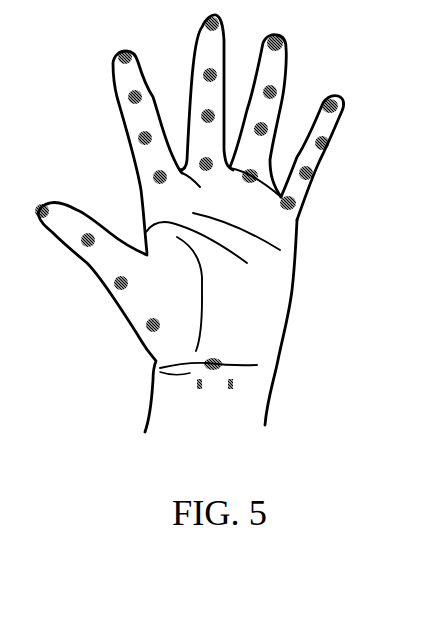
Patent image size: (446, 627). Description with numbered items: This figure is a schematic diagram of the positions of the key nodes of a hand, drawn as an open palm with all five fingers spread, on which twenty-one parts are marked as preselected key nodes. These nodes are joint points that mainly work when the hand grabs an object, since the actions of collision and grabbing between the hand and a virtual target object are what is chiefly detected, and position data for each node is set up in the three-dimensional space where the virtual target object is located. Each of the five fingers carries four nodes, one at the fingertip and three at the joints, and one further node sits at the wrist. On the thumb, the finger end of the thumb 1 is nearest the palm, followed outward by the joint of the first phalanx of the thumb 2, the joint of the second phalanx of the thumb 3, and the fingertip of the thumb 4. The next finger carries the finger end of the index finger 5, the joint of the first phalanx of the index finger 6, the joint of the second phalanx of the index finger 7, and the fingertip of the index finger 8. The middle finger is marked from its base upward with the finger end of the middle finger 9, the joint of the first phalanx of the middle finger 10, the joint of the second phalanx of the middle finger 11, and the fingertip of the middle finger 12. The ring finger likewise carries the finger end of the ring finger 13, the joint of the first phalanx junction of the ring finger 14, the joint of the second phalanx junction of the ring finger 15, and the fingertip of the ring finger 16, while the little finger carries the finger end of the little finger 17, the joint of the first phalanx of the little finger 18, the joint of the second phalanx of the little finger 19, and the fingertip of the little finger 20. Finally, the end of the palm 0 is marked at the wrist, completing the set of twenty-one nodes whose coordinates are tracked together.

The end of a palm key node 0 is at (219, 364).
The finger end of a thumb key node 1 is at (159, 324).
The joint of a first phalanx of the thumb key node 2 is at (127, 284).
The joint of a second phalanx of the thumb key node 3 is at (95, 241).
The fingertip of the thumb key node 4 is at (48, 211).
The finger end of an index finger key node 5 is at (166, 178).
The joint of a first phalanx of the index finger key node 6 is at (151, 141).
The joint of a second phalanx of the index finger key node 7 is at (141, 98).
The fingertip of the index finger key node 8 is at (131, 53).
The finger end of a middle finger key node 9 is at (210, 161).
The joint of a first phalanx of the middle finger key node 10 is at (223, 118).
The joint of a second phalanx of the middle finger key node 11 is at (223, 74).
The fingertip of the middle finger key node 12 is at (225, 24).
The finger end of a ring finger key node 13 is at (262, 178).
The joint of a first phalanx junction of the ring finger key node 14 is at (273, 131).
The joint of a second phalanx junction of the ring finger key node 15 is at (281, 94).
The fingertip of the ring finger key node 16 is at (288, 43).
The finger end of a little finger key node 17 is at (300, 208).
The joint of a first phalanx of the little finger key node 18 is at (319, 174).
The joint of a second phalanx of the little finger key node 19 is at (335, 144).
The fingertip of the little finger key node 20 is at (344, 108).